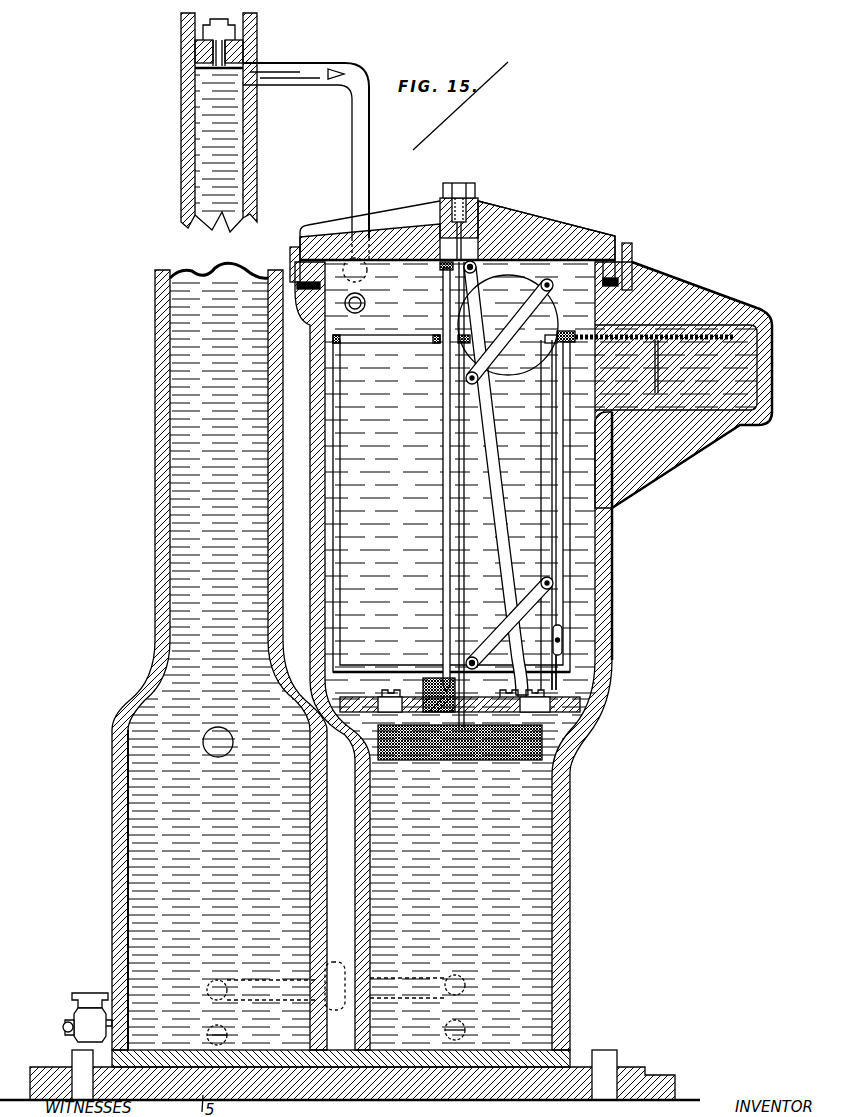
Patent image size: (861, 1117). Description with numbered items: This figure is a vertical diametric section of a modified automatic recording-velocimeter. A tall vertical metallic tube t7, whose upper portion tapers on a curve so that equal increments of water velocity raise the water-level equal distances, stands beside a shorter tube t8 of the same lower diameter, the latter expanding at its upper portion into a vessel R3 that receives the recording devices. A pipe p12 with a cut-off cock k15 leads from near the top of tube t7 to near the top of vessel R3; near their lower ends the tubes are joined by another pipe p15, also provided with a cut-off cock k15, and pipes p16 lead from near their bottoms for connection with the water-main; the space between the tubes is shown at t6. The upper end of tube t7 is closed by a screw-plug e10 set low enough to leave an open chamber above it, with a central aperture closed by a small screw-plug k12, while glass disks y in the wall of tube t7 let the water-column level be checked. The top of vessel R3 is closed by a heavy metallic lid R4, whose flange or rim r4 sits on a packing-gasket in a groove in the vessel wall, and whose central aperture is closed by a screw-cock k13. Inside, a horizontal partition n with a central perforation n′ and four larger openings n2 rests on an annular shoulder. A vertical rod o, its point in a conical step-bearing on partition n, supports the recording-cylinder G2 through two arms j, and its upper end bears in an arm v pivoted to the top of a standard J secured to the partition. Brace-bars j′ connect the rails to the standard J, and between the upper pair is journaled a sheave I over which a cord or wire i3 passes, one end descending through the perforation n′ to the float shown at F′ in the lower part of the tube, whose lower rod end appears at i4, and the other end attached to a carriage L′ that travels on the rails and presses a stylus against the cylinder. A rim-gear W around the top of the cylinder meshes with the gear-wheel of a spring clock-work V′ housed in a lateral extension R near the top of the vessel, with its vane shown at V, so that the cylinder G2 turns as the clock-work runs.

The screw-plug e10 is at (195, 52).
The small screw-plug k12 is at (243, 33).
The pipe p12 is at (306, 162).
The screw-cock k13 is at (478, 195).
The lid R4 is at (457, 243).
The flange or rim r4 is at (290, 275).
The cut-off cock k15 is at (367, 273).
The arm v is at (461, 277).
The standard J is at (496, 478).
The brace-bars j′ is at (509, 474).
The arms j is at (499, 653).
The sheave I is at (508, 325).
The rim-gear W is at (569, 328).
The spring clock-work V′ is at (655, 348).
The float V is at (660, 385).
The vessel R is at (691, 385).
The vessel R3 is at (463, 656).
The cord or wire i3 is at (443, 477).
The rod end i4 is at (600, 680).
The recording-cylinder G2 is at (340, 596).
The vertical rod o is at (444, 612).
The carriage L′ is at (562, 635).
The tube t8 is at (560, 650).
The horizontal partition n is at (460, 696).
The openings n2 is at (464, 701).
The central perforation n′ is at (464, 722).
The filter F′ is at (470, 760).
The vertical metallic tube t7 is at (219, 656).
The passage t6 is at (348, 958).
The glass disks y is at (218, 757).
The pipes p16 is at (227, 1035).
The pipe p15 is at (282, 1000).